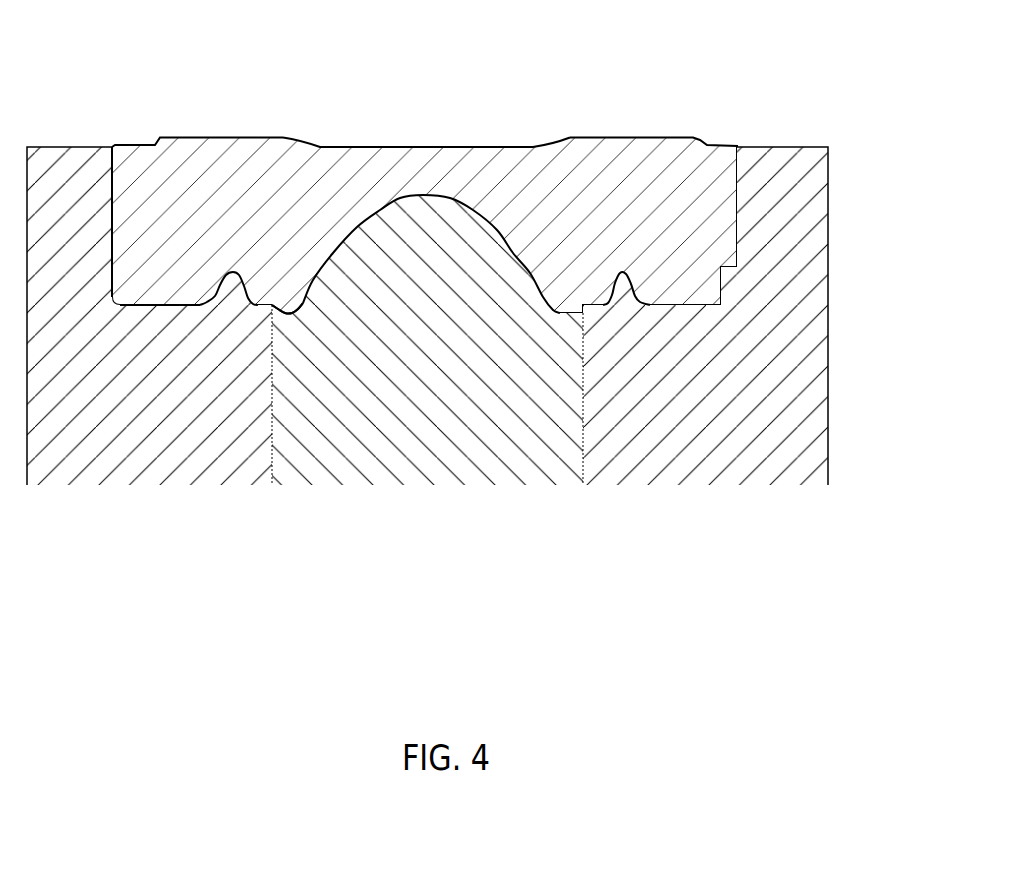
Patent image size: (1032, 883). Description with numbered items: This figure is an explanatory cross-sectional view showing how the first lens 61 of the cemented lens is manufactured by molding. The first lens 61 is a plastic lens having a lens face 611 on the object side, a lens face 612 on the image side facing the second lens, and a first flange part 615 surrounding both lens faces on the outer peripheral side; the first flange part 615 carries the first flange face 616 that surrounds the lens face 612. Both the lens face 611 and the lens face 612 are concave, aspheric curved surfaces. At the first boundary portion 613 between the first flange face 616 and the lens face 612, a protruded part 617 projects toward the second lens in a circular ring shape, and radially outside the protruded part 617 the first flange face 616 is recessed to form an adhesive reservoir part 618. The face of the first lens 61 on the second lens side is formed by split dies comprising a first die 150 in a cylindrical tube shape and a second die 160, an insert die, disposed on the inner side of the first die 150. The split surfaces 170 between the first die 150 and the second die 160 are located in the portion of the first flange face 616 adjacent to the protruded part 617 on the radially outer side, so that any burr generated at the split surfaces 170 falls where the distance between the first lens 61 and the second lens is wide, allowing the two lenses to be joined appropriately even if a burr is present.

The first lens 61 is at (640, 133).
The lens face 611 is at (470, 147).
The lens face 612 is at (478, 212).
The first boundary portion 613 is at (288, 310).
The first flange part 615 is at (168, 205).
The first flange face 616 is at (195, 303).
The protruded part 617 is at (461, 292).
The adhesive reservoir part 618 is at (224, 268).
The first die 150 is at (740, 377).
The second die 160 is at (435, 377).
The split surfaces 170 is at (266, 308).